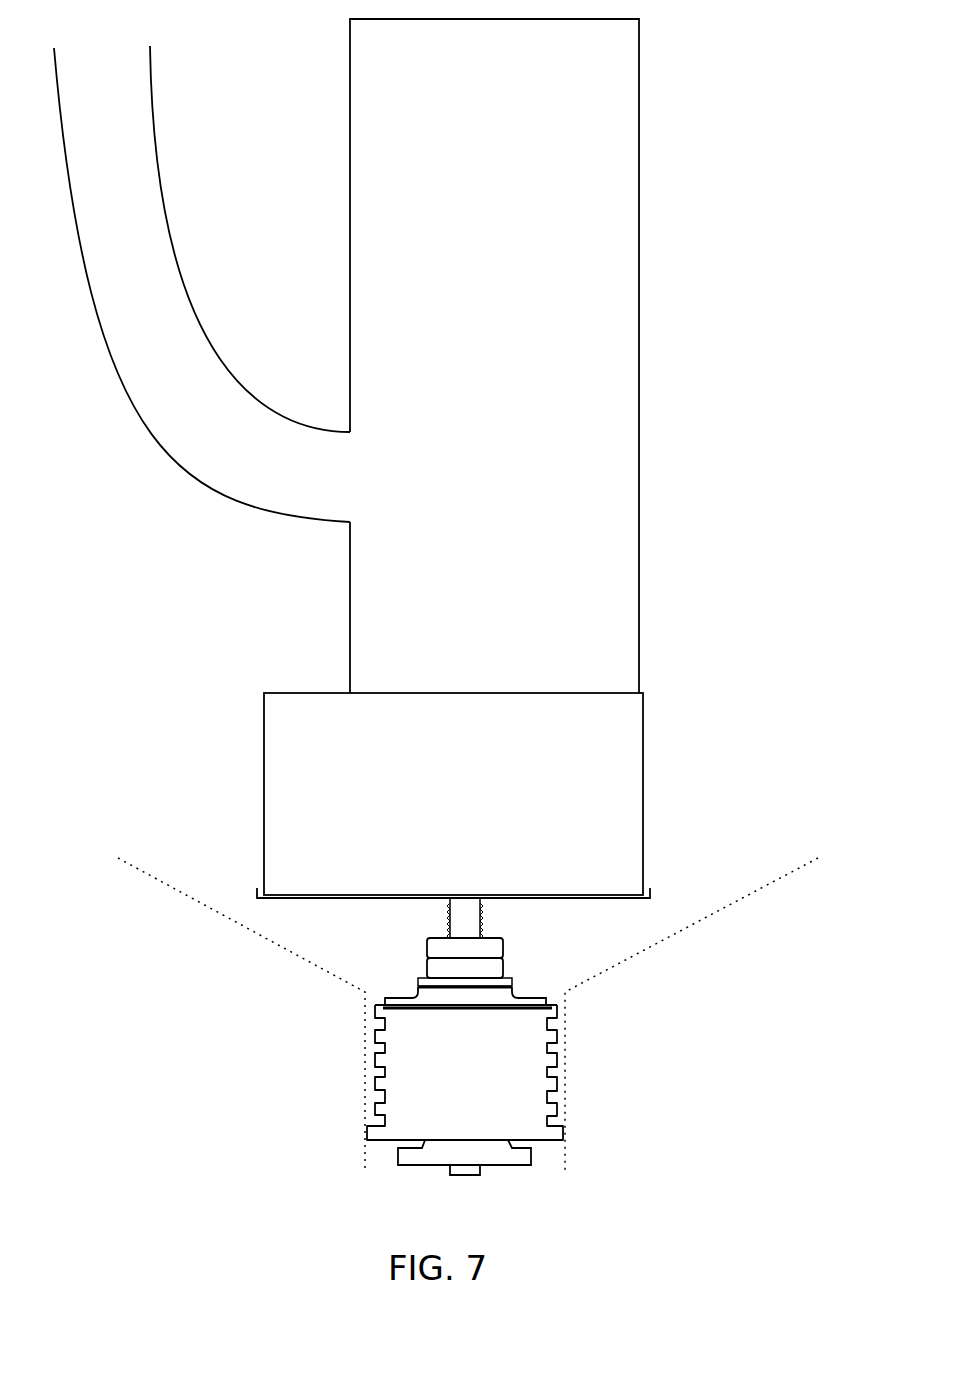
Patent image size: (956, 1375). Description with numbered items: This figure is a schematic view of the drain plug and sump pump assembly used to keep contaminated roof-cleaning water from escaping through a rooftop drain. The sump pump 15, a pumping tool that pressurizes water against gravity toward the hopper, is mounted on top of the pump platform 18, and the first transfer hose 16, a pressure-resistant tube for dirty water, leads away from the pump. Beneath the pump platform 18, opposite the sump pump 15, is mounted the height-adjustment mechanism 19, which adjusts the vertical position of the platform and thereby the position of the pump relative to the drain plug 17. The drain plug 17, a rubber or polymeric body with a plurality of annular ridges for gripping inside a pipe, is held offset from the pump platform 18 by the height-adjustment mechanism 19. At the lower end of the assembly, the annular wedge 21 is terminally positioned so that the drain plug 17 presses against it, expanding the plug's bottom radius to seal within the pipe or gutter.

The sump pump 15 is at (512, 341).
The first transfer hose 16 is at (150, 202).
The drain plug 17 is at (530, 1055).
The pump platform 18 is at (597, 900).
The height-adjustment mechanism 19 is at (405, 920).
The annular wedge 21 is at (410, 1162).